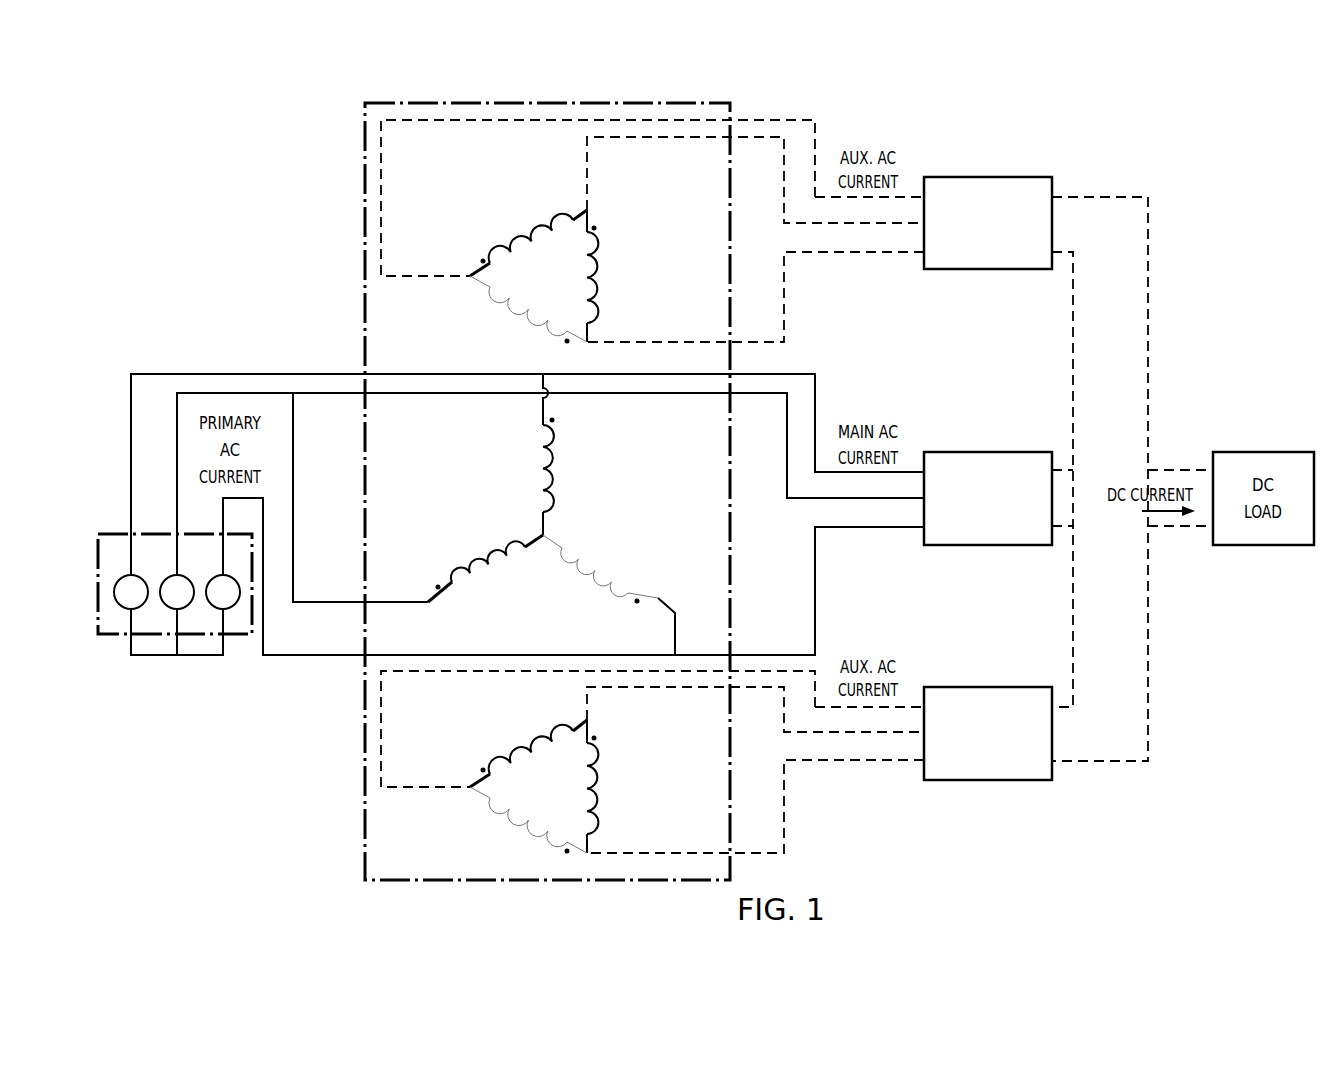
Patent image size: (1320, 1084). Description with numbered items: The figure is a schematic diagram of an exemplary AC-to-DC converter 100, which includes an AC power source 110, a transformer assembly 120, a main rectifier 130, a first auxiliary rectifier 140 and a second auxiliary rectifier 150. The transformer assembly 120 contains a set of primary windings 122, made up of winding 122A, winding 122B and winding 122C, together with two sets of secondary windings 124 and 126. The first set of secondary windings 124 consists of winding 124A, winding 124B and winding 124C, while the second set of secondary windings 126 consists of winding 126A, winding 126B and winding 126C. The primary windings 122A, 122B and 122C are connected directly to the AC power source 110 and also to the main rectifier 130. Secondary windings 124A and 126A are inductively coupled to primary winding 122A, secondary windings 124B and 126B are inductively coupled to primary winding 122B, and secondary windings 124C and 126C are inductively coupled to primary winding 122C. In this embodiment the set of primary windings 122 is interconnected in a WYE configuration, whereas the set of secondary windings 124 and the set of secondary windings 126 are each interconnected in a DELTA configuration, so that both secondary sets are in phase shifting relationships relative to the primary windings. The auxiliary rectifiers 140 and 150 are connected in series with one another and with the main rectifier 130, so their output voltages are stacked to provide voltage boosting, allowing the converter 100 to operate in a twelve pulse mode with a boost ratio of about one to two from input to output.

The AC-to-DC converter 100 is at (228, 196).
The AC power source 110 is at (108, 636).
The transformer assembly 120 is at (365, 178).
The set of primary windings 122 is at (532, 510).
The primary winding 122A is at (560, 460).
The primary winding 122B is at (608, 582).
The primary winding 122C is at (452, 573).
The set of secondary windings 124 is at (652, 232).
The secondary winding 124A is at (598, 247).
The secondary winding 124B is at (493, 298).
The secondary winding 124C is at (547, 218).
The set of secondary windings 126 is at (652, 762).
The secondary winding 126A is at (596, 757).
The secondary winding 126B is at (493, 810).
The secondary winding 126C is at (547, 730).
The main rectifier 130 is at (985, 452).
The first auxiliary rectifier 140 is at (988, 177).
The second auxiliary rectifier 150 is at (985, 687).